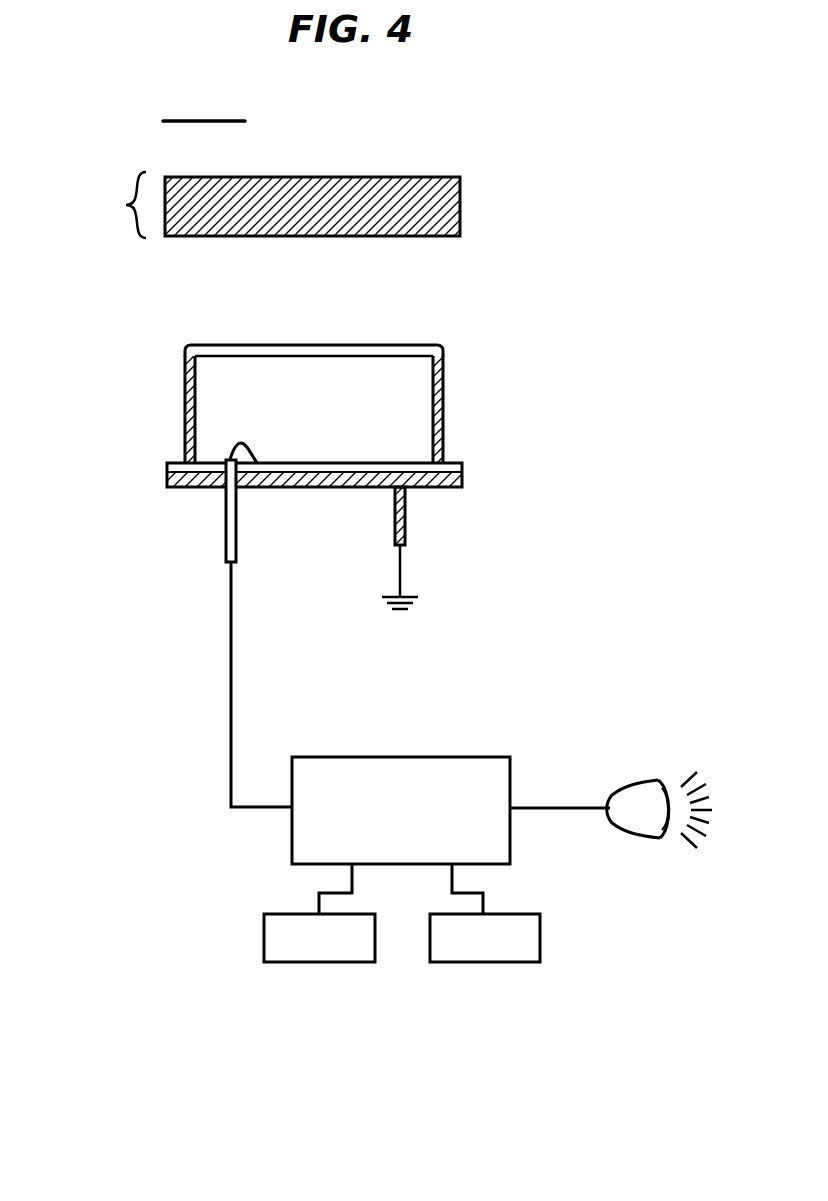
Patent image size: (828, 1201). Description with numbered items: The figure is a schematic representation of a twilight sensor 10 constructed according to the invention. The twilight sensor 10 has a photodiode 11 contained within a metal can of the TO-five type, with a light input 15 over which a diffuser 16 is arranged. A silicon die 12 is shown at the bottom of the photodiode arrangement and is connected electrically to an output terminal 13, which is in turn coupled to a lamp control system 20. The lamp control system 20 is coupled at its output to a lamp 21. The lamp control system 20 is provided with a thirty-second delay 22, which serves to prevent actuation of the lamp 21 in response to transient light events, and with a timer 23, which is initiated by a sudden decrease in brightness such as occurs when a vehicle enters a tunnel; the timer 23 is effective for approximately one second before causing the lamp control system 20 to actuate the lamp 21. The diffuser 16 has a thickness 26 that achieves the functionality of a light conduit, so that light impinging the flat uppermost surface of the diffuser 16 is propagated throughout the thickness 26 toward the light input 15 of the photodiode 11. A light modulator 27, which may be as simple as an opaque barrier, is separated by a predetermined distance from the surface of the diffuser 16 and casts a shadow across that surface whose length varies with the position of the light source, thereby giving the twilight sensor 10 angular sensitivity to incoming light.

The twilight sensor 10 is at (87, 425).
The photodiode 11 is at (455, 351).
The silicon die 12 is at (380, 454).
The output terminal 13 is at (225, 510).
The light input 15 is at (212, 340).
The diffuser 16 is at (470, 210).
The lamp control system 20 is at (465, 757).
The lamp 21 is at (633, 782).
The delay 22 is at (488, 963).
The timer 23 is at (305, 963).
The thickness 26 is at (126, 205).
The light modulator 27 is at (165, 120).